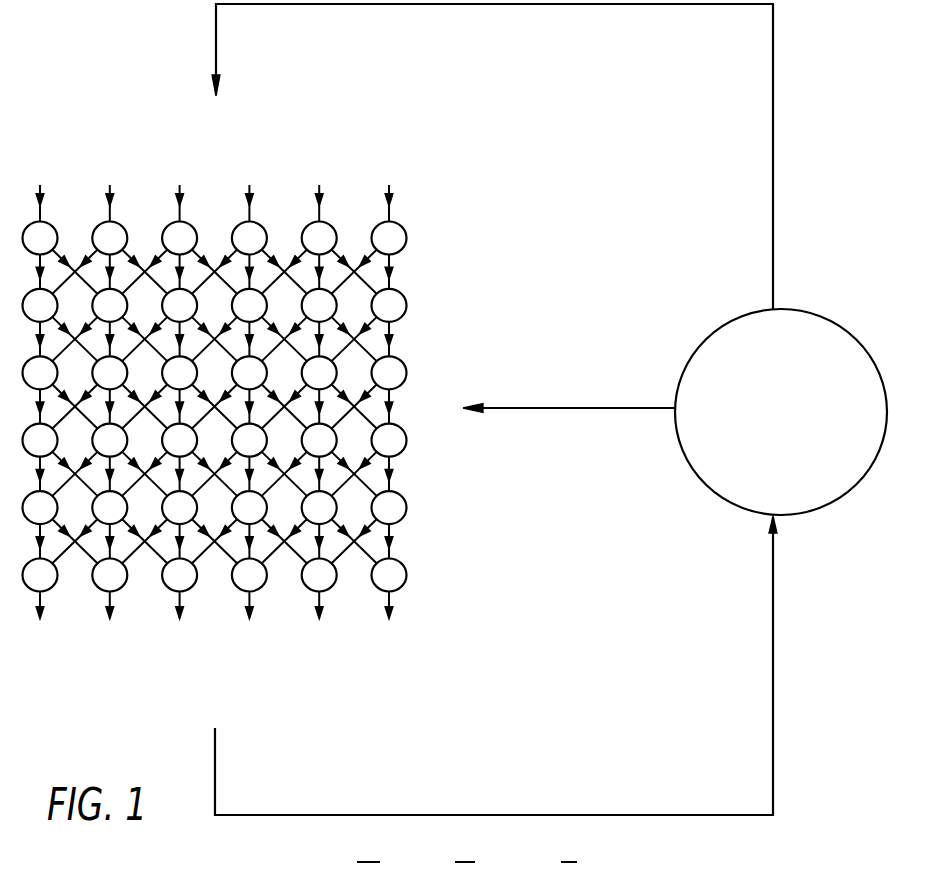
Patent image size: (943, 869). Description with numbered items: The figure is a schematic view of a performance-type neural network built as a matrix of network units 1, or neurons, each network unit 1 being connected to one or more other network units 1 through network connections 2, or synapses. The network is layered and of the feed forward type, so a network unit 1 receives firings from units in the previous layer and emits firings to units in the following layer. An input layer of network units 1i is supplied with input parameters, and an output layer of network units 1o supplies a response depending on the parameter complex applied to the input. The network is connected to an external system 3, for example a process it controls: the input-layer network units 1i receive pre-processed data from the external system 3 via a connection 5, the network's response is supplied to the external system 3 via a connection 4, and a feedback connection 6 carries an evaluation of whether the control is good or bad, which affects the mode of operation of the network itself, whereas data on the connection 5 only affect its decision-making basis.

The network unit 1 is at (412, 512).
The input-layer network unit 1i is at (401, 224).
The output-layer network unit 1o is at (408, 585).
The network connection 2 is at (397, 343).
The external system 3 is at (820, 315).
The connection 4 is at (530, 815).
The connection 5 is at (530, 5).
The feedback connection 6 is at (550, 408).